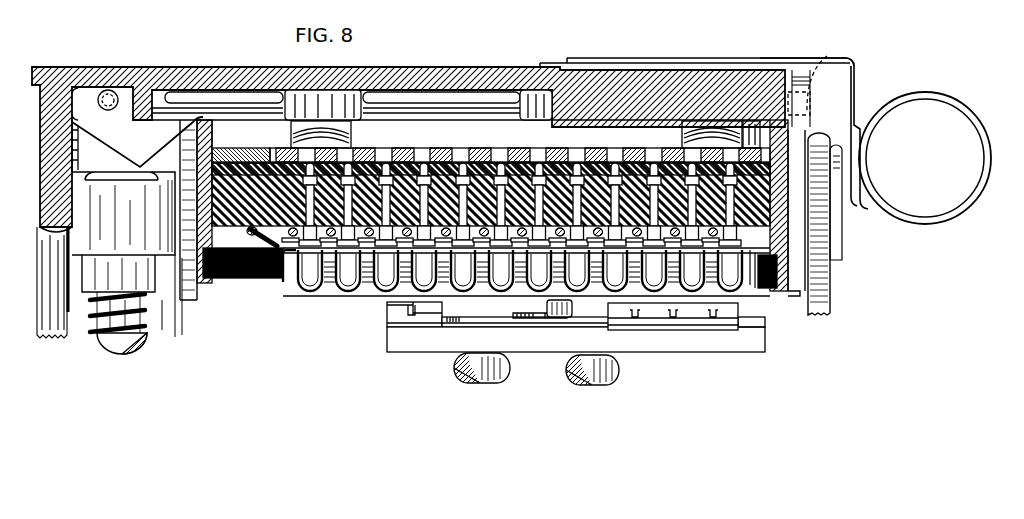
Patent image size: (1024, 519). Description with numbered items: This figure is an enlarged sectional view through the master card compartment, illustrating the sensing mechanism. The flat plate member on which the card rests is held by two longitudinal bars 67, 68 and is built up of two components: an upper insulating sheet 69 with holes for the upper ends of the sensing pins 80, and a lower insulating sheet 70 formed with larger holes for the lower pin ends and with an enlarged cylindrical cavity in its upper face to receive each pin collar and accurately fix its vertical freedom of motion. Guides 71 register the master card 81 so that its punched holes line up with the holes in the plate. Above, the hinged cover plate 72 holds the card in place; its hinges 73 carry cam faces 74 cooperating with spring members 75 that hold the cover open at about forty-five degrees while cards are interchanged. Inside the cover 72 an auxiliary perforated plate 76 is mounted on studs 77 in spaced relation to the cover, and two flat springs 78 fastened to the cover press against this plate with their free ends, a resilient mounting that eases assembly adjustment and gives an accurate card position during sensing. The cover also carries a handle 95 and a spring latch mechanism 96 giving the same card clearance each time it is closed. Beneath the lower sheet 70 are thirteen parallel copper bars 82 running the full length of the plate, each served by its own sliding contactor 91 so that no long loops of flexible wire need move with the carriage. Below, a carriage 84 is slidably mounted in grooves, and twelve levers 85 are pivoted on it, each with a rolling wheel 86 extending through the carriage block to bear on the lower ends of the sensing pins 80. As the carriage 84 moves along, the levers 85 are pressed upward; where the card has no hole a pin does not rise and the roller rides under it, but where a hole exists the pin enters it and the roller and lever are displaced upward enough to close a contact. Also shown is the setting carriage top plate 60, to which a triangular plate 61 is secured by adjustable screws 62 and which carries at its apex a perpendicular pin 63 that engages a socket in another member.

The top plate 60 is at (453, 328).
The triangular plate 61 is at (490, 318).
The adjustable screws 62 is at (517, 313).
The perpendicular pin 63 is at (573, 308).
The longitudinal bar 67 is at (203, 285).
The longitudinal bar 68 is at (777, 290).
The upper insulating sheet 69 is at (227, 149).
The lower insulating sheet 70 is at (757, 233).
The guides 71 is at (253, 149).
The hinged cover plate 72 is at (483, 73).
The hinges 73 is at (108, 100).
The cam faces 74 is at (113, 147).
The spring members 75 is at (88, 315).
The auxiliary perforated plate 76 is at (448, 144).
The studs 77 is at (291, 136).
The flat springs 78 is at (350, 132).
The sensing pins 80 is at (424, 163).
The master card 81 is at (540, 148).
The copper bars 82 is at (243, 240).
The carriage 84 is at (300, 317).
The levers 85 is at (368, 294).
The rolling wheel 86 is at (758, 284).
The sliding contactor 91 is at (265, 279).
The handle 95 is at (978, 123).
The spring latch mechanism 96 is at (830, 56).